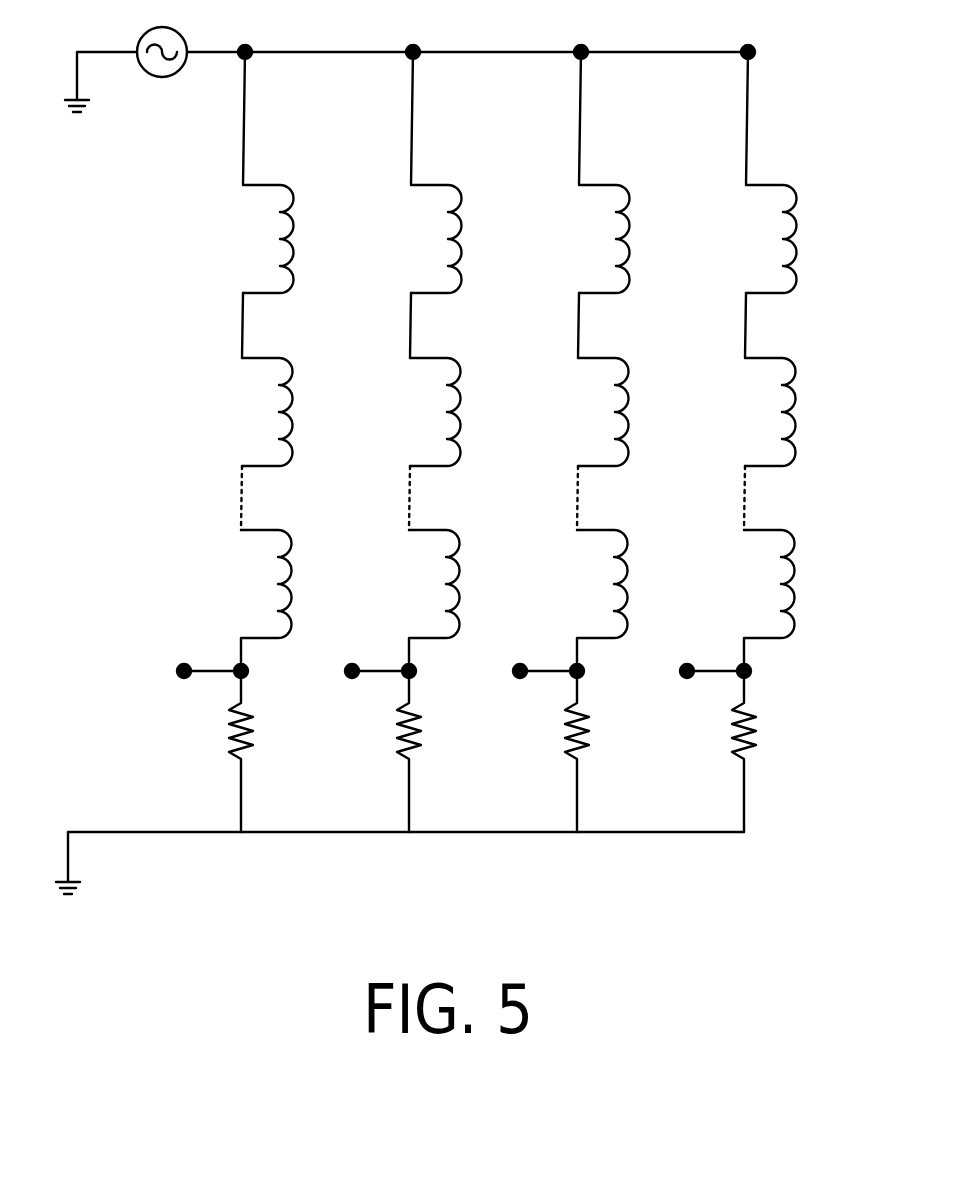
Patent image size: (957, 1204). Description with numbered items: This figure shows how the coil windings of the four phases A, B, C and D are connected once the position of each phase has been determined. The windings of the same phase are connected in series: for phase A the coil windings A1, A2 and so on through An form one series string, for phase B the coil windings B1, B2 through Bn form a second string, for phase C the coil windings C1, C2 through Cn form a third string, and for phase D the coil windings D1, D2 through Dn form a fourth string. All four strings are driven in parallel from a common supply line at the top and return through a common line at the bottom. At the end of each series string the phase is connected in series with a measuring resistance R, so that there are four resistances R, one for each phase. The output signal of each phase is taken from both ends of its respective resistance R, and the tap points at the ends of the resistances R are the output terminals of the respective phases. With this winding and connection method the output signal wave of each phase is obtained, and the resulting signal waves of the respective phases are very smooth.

The coil winding of phase A A1 is at (300, 172).
The coil winding of phase A A2 is at (299, 379).
The coil winding of phase A An is at (301, 568).
The coil winding of phase B B1 is at (468, 172).
The coil winding of phase B B2 is at (467, 379).
The coil winding of phase B Bn is at (469, 568).
The coil winding of phase C C1 is at (636, 172).
The coil winding of phase C C2 is at (635, 379).
The coil winding of phase C Cn is at (637, 568).
The coil winding of phase D D1 is at (803, 172).
The coil winding of phase D D2 is at (802, 379).
The coil winding of phase D Dn is at (804, 568).
The measuring resistance R is at (485, 748).